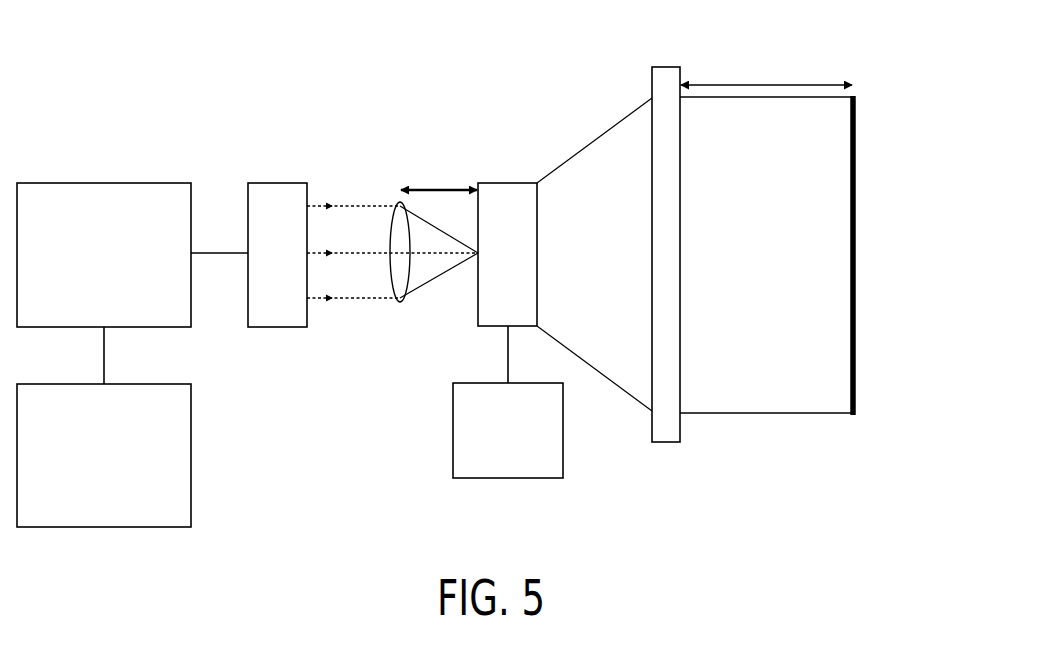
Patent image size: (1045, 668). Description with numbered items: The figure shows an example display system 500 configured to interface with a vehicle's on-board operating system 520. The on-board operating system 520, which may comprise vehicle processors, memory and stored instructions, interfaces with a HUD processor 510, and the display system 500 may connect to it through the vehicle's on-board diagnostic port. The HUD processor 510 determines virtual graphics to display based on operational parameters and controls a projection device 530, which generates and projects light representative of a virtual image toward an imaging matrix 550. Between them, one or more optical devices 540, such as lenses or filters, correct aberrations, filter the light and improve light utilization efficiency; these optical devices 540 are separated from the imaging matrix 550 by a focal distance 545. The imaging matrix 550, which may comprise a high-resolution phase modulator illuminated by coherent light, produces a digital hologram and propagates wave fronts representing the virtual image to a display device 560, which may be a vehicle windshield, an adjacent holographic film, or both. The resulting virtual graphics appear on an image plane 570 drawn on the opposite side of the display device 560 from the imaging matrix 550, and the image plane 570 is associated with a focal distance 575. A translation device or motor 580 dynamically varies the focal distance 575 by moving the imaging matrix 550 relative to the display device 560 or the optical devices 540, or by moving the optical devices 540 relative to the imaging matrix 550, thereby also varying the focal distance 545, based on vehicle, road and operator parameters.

The display system 500 is at (190, 94).
The HUD processor 510 is at (83, 294).
The on-board operating system 520 is at (85, 510).
The projection device 530 is at (281, 183).
The optical devices 540 is at (400, 300).
The focal distance 545 is at (437, 189).
The imaging matrix 550 is at (508, 183).
The display device 560 is at (680, 262).
The image plane 570 is at (857, 232).
The focal distance 575 is at (760, 84).
The motor 580 is at (528, 458).